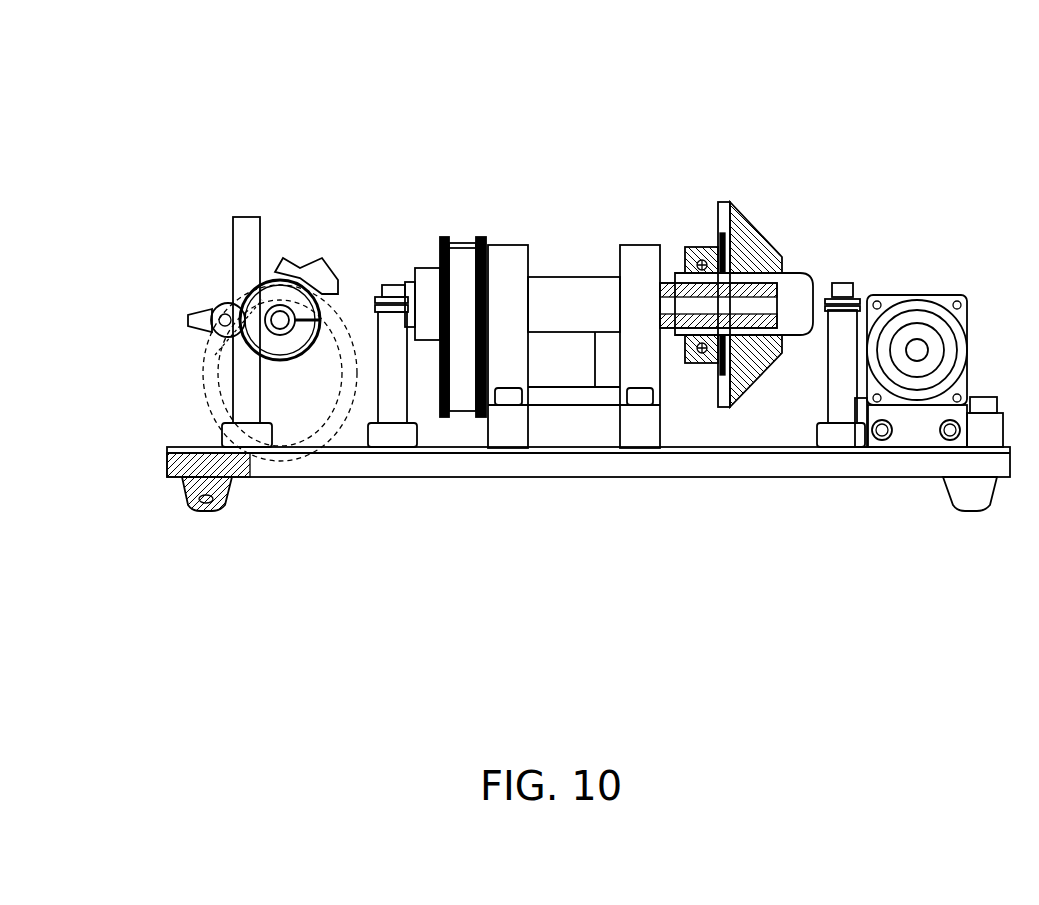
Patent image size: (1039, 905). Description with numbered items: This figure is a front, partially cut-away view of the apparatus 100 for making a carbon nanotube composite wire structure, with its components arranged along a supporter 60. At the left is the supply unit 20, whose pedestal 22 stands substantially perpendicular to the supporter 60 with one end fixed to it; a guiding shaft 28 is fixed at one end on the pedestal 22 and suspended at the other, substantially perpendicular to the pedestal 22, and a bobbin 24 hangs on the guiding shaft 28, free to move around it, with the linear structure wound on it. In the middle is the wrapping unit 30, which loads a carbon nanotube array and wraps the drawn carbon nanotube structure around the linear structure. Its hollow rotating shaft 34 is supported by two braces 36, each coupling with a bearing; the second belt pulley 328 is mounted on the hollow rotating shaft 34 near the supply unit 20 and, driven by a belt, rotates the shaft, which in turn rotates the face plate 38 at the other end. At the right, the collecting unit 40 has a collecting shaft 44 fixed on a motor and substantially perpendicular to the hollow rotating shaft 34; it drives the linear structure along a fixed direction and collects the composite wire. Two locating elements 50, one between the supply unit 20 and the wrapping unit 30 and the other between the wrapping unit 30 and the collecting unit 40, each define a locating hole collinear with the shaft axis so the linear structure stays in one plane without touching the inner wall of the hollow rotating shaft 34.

The apparatus 100 is at (345, 102).
The supply unit 20 is at (218, 215).
The pedestal 22 is at (240, 255).
The bobbin 24 is at (202, 382).
The guiding shaft 28 is at (262, 350).
The wrapping unit 30 is at (485, 222).
The second belt pulley 328 is at (458, 393).
The hollow rotating shaft 34 is at (577, 288).
The brace 36 is at (650, 433).
The face plate 38 is at (737, 407).
The collecting unit 40 is at (910, 260).
The collecting shaft 44 is at (927, 312).
The locating element 50 is at (373, 313).
The supporter 60 is at (565, 465).